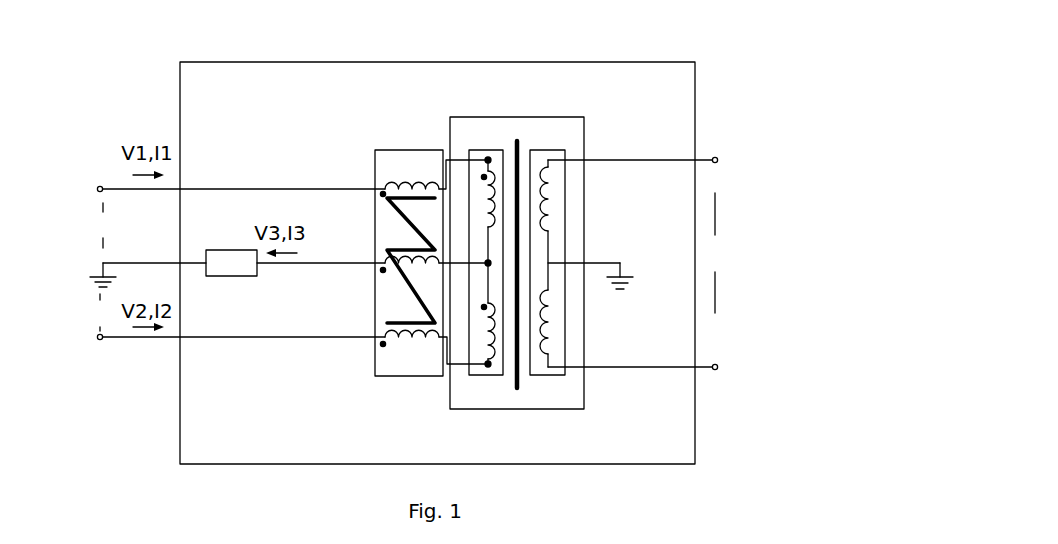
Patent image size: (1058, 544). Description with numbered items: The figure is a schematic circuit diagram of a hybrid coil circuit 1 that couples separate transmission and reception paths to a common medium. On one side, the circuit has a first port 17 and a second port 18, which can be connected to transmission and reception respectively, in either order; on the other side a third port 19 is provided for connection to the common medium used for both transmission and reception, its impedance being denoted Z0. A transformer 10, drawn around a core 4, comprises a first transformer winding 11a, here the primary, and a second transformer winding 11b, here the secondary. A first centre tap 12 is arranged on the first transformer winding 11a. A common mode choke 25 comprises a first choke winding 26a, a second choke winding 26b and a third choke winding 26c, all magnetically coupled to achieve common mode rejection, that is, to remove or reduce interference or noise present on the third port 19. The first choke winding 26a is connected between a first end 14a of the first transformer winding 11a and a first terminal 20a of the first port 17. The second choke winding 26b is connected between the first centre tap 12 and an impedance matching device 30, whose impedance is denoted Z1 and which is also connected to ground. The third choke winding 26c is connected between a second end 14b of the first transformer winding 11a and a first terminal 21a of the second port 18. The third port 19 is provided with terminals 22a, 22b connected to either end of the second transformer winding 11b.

The hybrid coil circuit 1 is at (676, 61).
The transformer 10 is at (568, 117).
The core 4 is at (517, 141).
The first transformer winding 11a is at (487, 372).
The second transformer winding 11b is at (550, 377).
The first centre tap 12 is at (487, 261).
The first end of the first transformer winding 14a is at (486, 158).
The second end of the first transformer winding 14b is at (486, 366).
The first port 17 is at (102, 225).
The second port 18 is at (99, 312).
The third port 19 is at (713, 253).
The first terminal of the first port 20a is at (99, 186).
The first terminal of the second port 21a is at (100, 340).
The terminal of the third port 22a is at (718, 158).
The terminal of the third port 22b is at (718, 365).
The common mode choke 25 is at (413, 150).
The first choke winding 26a is at (390, 176).
The second choke winding 26b is at (413, 245).
The third choke winding 26c is at (388, 325).
The impedance matching device 30 is at (213, 250).